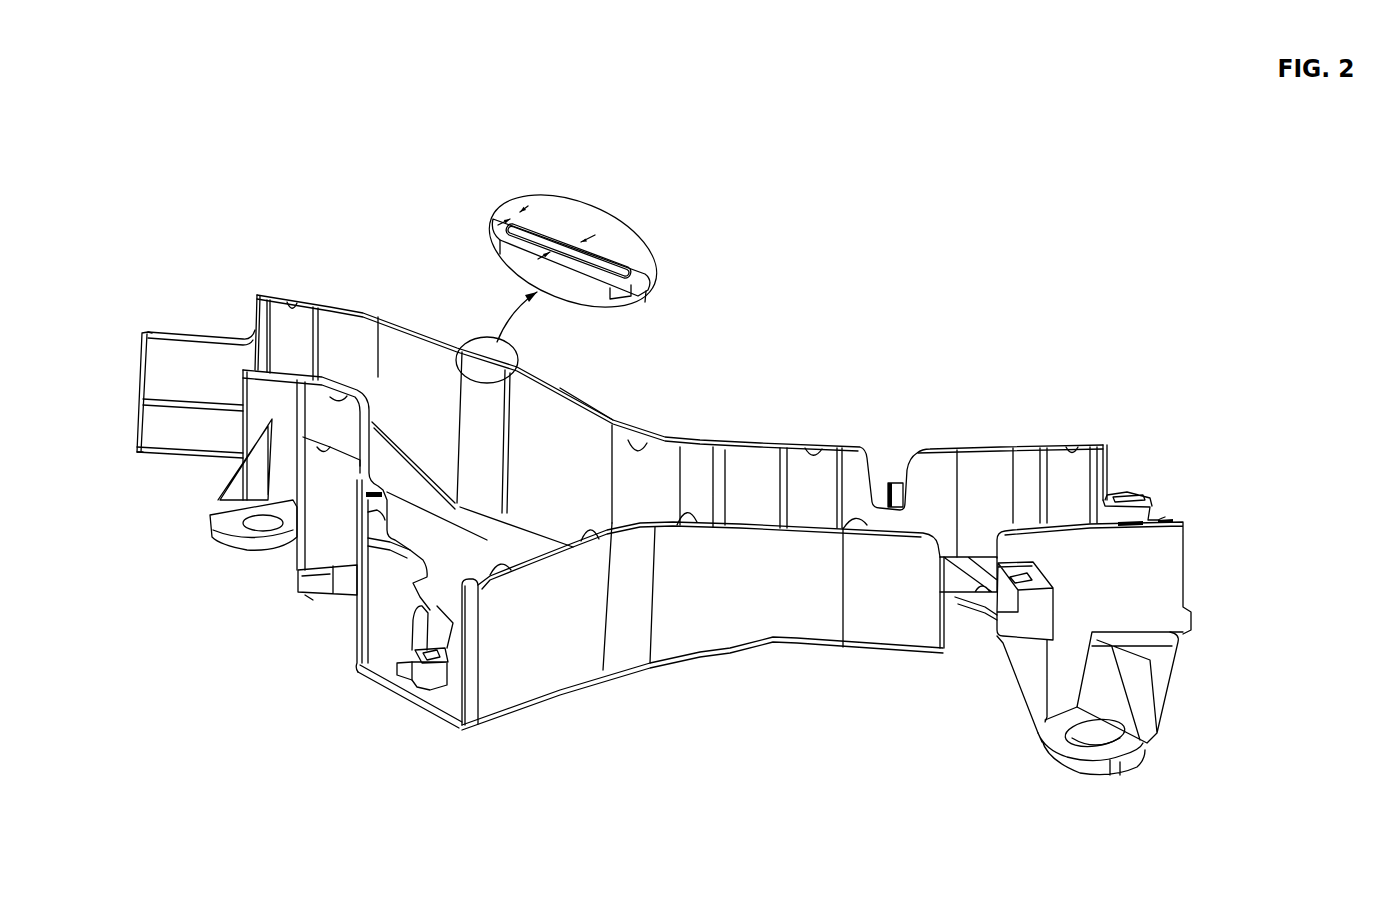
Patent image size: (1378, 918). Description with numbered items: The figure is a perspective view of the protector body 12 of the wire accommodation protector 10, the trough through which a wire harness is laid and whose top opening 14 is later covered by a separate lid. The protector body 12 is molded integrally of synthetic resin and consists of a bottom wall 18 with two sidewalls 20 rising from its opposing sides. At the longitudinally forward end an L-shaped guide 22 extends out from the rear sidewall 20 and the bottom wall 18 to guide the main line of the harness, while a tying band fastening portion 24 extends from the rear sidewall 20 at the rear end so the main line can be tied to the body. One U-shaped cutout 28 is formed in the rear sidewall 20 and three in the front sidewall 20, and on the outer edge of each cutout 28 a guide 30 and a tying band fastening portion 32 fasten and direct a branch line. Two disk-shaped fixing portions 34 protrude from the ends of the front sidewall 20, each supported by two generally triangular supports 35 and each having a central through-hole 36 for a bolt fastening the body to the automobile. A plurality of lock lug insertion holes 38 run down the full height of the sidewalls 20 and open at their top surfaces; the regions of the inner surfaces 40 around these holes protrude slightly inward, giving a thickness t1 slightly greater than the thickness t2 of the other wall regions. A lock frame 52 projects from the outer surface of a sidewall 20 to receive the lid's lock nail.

The wire accommodation protector 10 is at (823, 258).
The protector body 12 is at (780, 363).
The top opening 14 is at (580, 540).
The bottom wall 18 is at (488, 553).
The sidewall 20 is at (1162, 563).
The L-shaped guide 22 is at (167, 352).
The tying band fastening portion 24 is at (1150, 497).
The U-shaped cutout 28 is at (362, 523).
The guide 30 is at (397, 655).
The tying band fastening portion 32 is at (317, 590).
The fixing portion 34 is at (227, 510).
The support 35 is at (250, 480).
The through-hole 36 is at (257, 523).
The lock lug insertion hole 38 is at (296, 308).
The inner surface 40 is at (297, 352).
The lock frame 52 is at (597, 402).
The thickness t1 is at (565, 245).
The thickness t2 is at (505, 217).